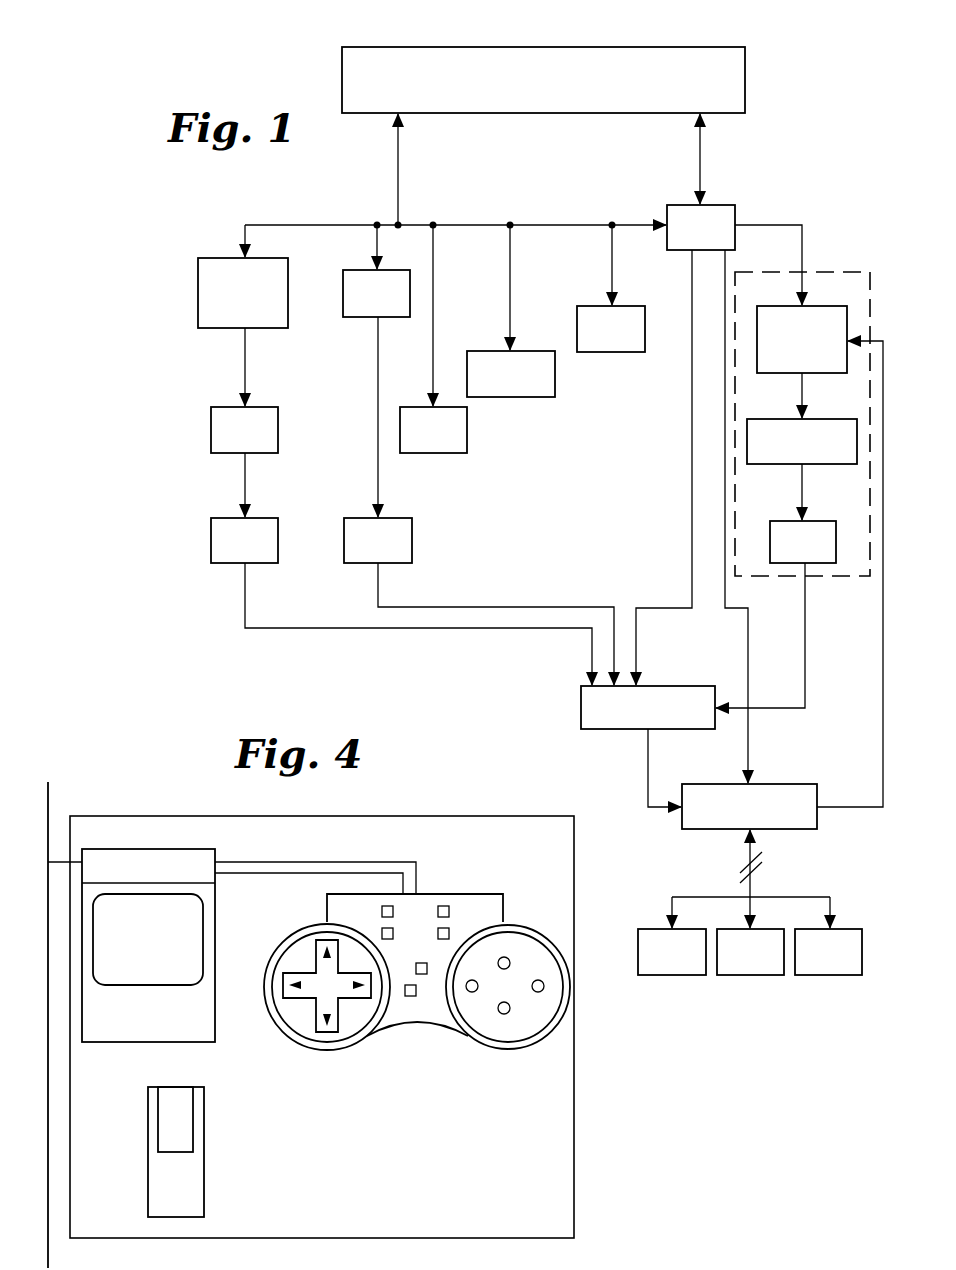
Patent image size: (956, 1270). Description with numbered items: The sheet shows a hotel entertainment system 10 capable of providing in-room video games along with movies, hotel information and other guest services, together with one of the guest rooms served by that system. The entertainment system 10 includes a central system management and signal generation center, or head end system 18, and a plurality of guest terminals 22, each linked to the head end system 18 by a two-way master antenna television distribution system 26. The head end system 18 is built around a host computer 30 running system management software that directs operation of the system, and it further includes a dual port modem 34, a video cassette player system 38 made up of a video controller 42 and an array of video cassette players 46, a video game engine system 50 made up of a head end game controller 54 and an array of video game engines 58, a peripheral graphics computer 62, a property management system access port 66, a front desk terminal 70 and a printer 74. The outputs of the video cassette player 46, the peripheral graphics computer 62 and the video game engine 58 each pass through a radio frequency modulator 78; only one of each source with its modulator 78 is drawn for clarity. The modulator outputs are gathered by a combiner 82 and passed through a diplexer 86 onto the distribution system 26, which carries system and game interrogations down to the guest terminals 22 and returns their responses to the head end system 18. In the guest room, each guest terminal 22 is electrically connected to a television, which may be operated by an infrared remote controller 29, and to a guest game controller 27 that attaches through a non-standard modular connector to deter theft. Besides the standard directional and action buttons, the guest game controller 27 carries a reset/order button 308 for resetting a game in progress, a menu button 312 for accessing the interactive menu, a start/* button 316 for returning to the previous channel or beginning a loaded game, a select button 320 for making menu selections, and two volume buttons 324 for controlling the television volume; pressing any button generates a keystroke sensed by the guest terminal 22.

In FIG. 1, the entertainment system 10 is at (814, 66).
In FIG. 1, the head end system 18 is at (143, 362).
In FIG. 1, the guest terminal 22 is at (672, 975).
In FIG. 4, the guest terminal 22 is at (137, 849).
In FIG. 1, the two-way master antenna television (MATV) distribution system 26 is at (752, 885).
In FIG. 4, the two-way master antenna television (MATV) distribution system 26 is at (48, 975).
In FIG. 4, the guest game controller 27 is at (504, 1050).
In FIG. 4, the infrared remote controller 29 is at (205, 1132).
In FIG. 1, the host computer 30 is at (352, 47).
In FIG. 1, the dual port modem 34 is at (735, 205).
In FIG. 1, the video cassette player system 38 is at (187, 348).
In FIG. 1, the video controller 42 is at (198, 258).
In FIG. 1, the video cassette player 46 is at (211, 452).
In FIG. 1, the video game engine system 50 is at (872, 280).
In FIG. 1, the head end game controller 54 is at (822, 373).
In FIG. 1, the video game engine 58 is at (812, 464).
In FIG. 1, the peripheral graphics computer 62 is at (344, 317).
In FIG. 1, the property management system access port 66 is at (433, 453).
In FIG. 1, the front desk terminal 70 is at (510, 397).
In FIG. 1, the printer 74 is at (610, 352).
In FIG. 1, the RF modulator 78 is at (210, 543).
In FIG. 1, the combiner 82 is at (606, 729).
In FIG. 1, the diplexer 86 is at (700, 829).
In FIG. 4, the reset/order button 308 is at (392, 906).
In FIG. 4, the menu button 312 is at (380, 930).
In FIG. 4, the start/* button 316 is at (427, 975).
In FIG. 4, the select button 320 is at (405, 997).
In FIG. 4, the volume buttons 324 is at (449, 929).